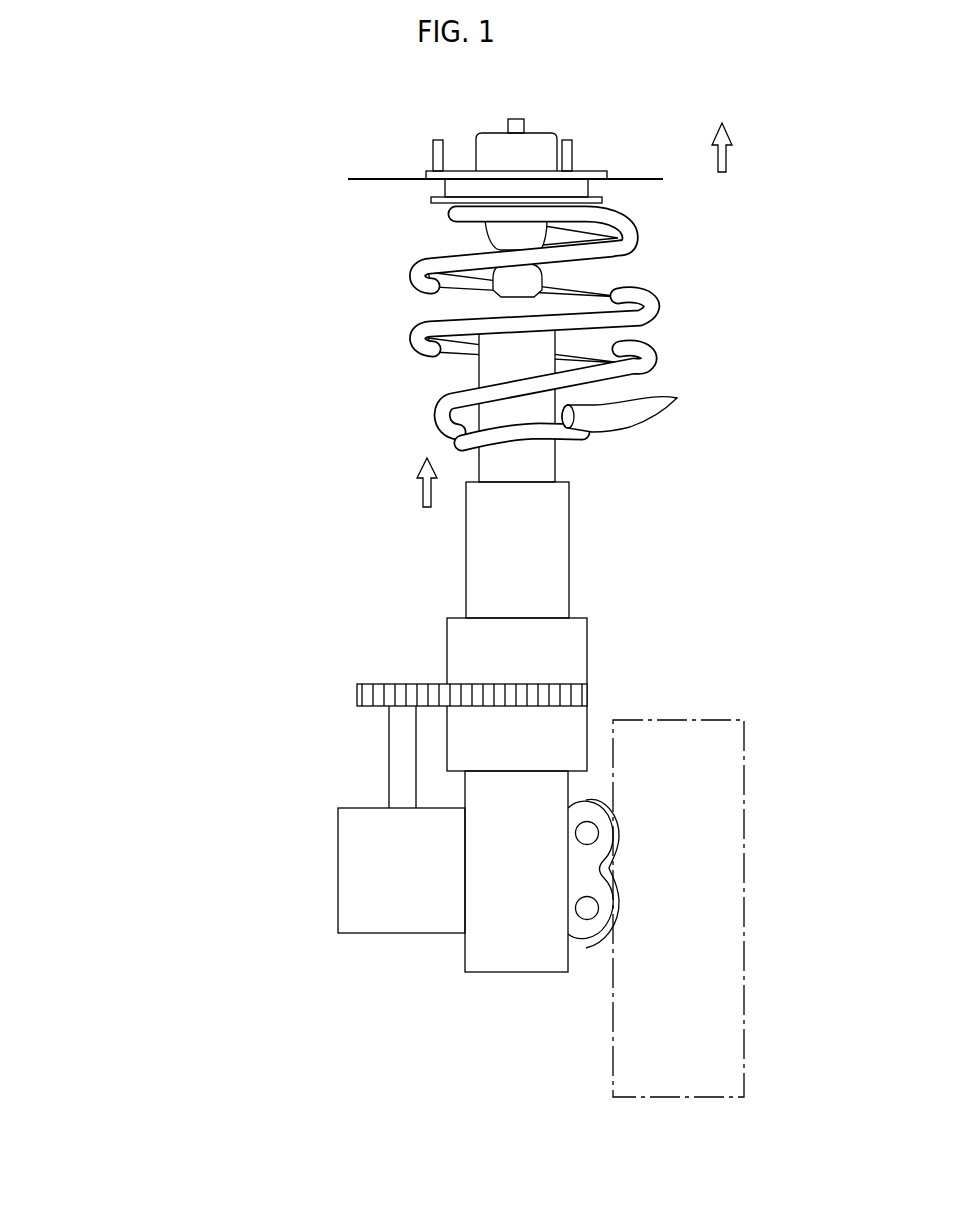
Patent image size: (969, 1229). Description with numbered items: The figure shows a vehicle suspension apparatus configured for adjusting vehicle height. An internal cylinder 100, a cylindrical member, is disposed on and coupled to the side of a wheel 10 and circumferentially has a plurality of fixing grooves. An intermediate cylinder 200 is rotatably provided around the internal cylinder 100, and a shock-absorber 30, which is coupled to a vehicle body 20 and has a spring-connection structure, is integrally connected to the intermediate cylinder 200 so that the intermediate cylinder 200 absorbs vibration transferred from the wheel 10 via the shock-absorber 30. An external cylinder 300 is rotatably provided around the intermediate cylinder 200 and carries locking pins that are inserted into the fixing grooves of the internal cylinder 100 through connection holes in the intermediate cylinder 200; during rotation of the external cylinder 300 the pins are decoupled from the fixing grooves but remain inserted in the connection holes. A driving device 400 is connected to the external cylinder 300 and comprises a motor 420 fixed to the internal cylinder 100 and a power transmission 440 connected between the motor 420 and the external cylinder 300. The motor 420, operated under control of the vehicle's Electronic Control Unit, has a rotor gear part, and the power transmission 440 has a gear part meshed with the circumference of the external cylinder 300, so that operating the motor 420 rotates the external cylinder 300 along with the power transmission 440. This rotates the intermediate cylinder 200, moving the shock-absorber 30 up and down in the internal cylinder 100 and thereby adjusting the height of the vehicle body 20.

The wheel 10 is at (730, 915).
The vehicle body 20 is at (643, 179).
The shock-absorber 30 is at (462, 374).
The internal cylinder 100 is at (518, 947).
The intermediate cylinder 200 is at (480, 554).
The external cylinder 300 is at (565, 658).
The driving device 400 is at (335, 778).
The motor 420 is at (324, 870).
The power transmission 440 is at (482, 683).